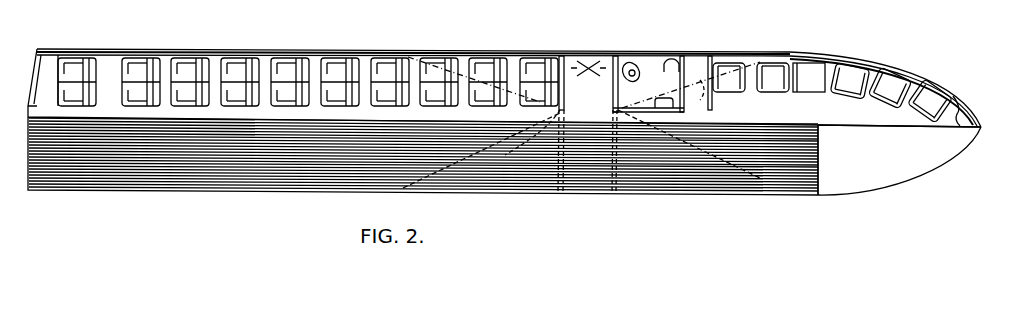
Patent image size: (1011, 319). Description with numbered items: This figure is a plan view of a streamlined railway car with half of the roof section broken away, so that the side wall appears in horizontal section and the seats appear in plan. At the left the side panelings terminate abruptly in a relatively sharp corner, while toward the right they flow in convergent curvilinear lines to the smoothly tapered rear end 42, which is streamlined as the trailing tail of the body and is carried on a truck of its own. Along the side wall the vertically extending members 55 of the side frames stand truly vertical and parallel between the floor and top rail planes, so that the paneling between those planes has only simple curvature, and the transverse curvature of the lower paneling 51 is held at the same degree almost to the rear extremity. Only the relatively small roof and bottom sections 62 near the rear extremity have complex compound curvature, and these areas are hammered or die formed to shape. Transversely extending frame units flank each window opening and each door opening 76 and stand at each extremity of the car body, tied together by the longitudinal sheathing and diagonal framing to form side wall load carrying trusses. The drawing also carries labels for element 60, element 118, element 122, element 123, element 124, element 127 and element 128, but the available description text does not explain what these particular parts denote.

The rear end 42 is at (973, 96).
The paneling 51 is at (712, 193).
The vertically extending members 55 is at (168, 53).
The nose 60 is at (921, 160).
The roof and bottom sections 62 is at (925, 147).
The door opening 76 is at (602, 59).
The doors 118 is at (552, 192).
The seat 122 is at (708, 98).
The seat 123 is at (769, 89).
The window 124 is at (803, 89).
The compartment 127 is at (601, 102).
The luggage rack 128 is at (581, 61).